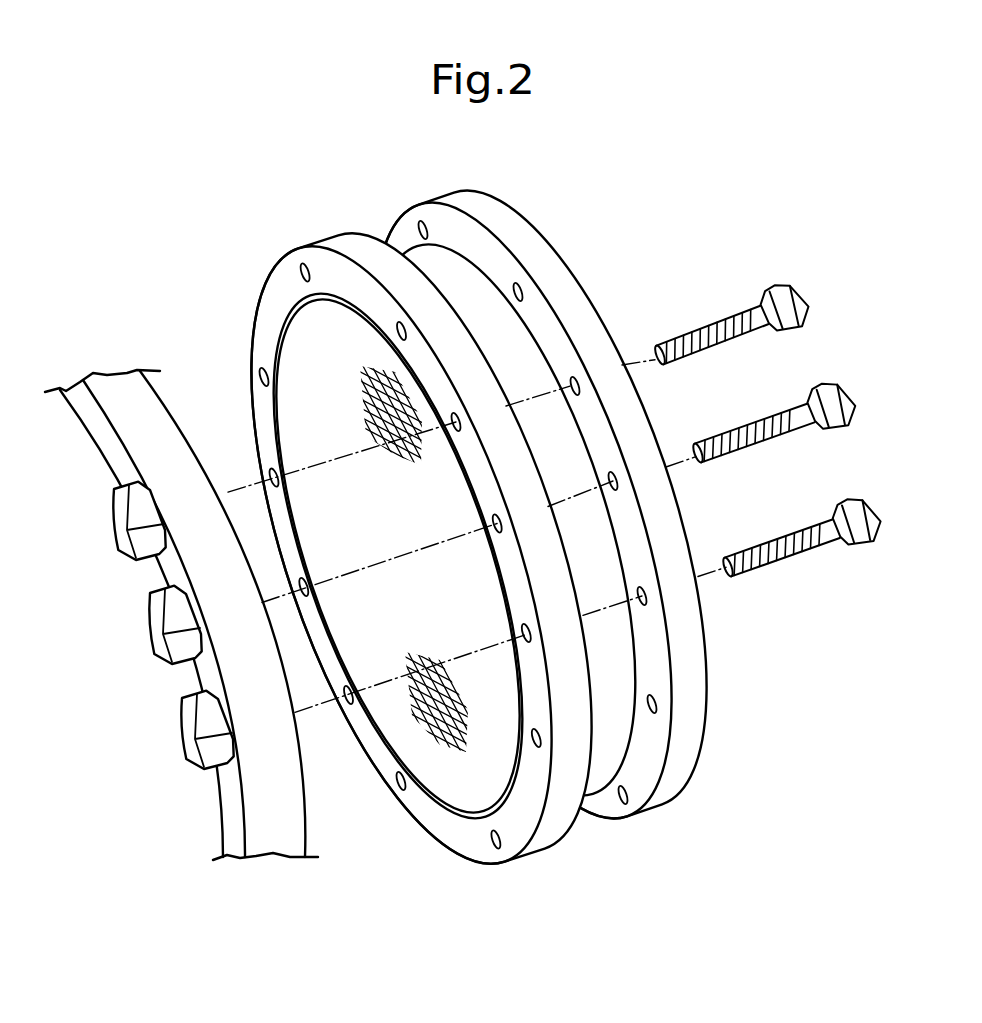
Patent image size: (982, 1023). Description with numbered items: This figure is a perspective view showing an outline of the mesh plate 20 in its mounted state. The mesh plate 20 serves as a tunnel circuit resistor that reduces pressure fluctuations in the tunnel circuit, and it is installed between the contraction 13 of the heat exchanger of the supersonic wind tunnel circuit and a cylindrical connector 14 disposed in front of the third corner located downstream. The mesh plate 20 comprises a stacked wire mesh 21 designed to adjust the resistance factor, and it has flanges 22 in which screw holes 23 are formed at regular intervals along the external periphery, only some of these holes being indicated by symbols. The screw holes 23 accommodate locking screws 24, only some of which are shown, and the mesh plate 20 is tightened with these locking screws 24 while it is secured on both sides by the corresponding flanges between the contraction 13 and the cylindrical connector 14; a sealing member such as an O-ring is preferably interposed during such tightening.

The contraction 13 is at (117, 362).
The cylindrical connector 14 is at (537, 228).
The mesh plate 20 is at (401, 521).
The stacked wire mesh 21 is at (423, 697).
The flanges 22 is at (433, 818).
The screw holes 23 is at (463, 430).
The locking screws 24 is at (760, 307).